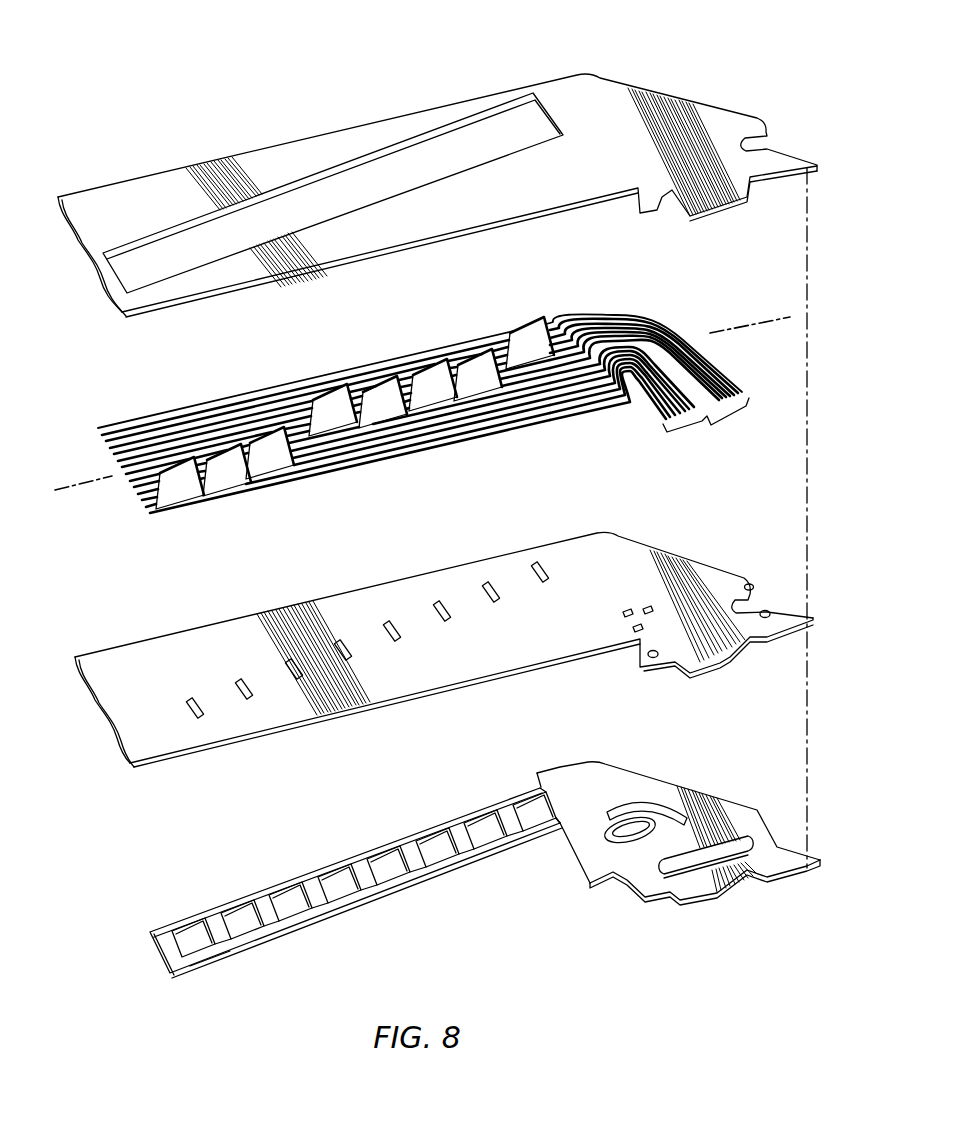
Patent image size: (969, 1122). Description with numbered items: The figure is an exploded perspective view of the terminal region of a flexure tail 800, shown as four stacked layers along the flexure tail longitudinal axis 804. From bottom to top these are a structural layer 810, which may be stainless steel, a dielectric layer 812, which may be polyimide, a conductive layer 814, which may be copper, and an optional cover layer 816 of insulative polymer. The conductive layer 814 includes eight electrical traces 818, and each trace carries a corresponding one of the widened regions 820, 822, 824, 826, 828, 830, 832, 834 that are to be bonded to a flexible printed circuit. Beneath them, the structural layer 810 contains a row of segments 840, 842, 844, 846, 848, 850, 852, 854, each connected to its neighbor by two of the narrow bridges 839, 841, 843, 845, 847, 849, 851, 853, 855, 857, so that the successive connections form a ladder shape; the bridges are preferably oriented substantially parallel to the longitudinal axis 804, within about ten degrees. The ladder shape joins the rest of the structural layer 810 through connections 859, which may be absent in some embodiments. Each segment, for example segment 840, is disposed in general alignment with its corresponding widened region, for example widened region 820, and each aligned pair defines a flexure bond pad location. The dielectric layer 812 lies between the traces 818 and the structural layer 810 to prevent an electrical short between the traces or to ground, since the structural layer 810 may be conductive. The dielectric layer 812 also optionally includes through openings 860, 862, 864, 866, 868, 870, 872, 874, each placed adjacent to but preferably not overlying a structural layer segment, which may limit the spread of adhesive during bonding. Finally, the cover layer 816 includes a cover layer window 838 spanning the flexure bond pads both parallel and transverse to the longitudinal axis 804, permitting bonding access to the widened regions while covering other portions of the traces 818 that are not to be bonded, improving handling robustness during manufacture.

The flexure tail 800 is at (196, 56).
The flexure tail longitudinal axis 804 is at (105, 478).
The structural layer 810 is at (723, 783).
The dielectric layer 812 is at (738, 553).
The conductive layer 814 is at (693, 322).
The cover layer 816 is at (695, 90).
The electrical traces 818 is at (706, 427).
The widened region 820 is at (165, 497).
The widened region 822 is at (213, 482).
The widened region 824 is at (263, 462).
The widened region 826 is at (305, 450).
The widened region 828 is at (366, 412).
The widened region 830 is at (417, 395).
The widened region 832 is at (463, 370).
The widened region 834 is at (513, 352).
The cover layer window 838 is at (312, 205).
The narrow bridge 839 is at (207, 975).
The segment 840 is at (165, 952).
The narrow bridge 841 is at (185, 922).
The segment 842 is at (232, 928).
The narrow bridge 843 is at (235, 900).
The segment 844 is at (283, 898).
The narrow bridge 845 is at (308, 920).
The segment 846 is at (313, 887).
The narrow bridge 847 is at (357, 905).
The segment 848 is at (385, 873).
The narrow bridge 849 is at (333, 870).
The segment 850 is at (412, 850).
The narrow bridge 851 is at (450, 845).
The segment 852 is at (463, 830).
The narrow bridge 853 is at (430, 860).
The segment 854 is at (520, 818).
The narrow bridge 855 is at (480, 800).
The narrow bridge 857 is at (515, 840).
The connections 859 is at (518, 795).
The through opening 860 is at (187, 703).
The through opening 862 is at (237, 688).
The through opening 864 is at (287, 668).
The through opening 866 is at (352, 653).
The through opening 868 is at (401, 635).
The through opening 870 is at (450, 617).
The through opening 872 is at (499, 596).
The through opening 874 is at (548, 575).